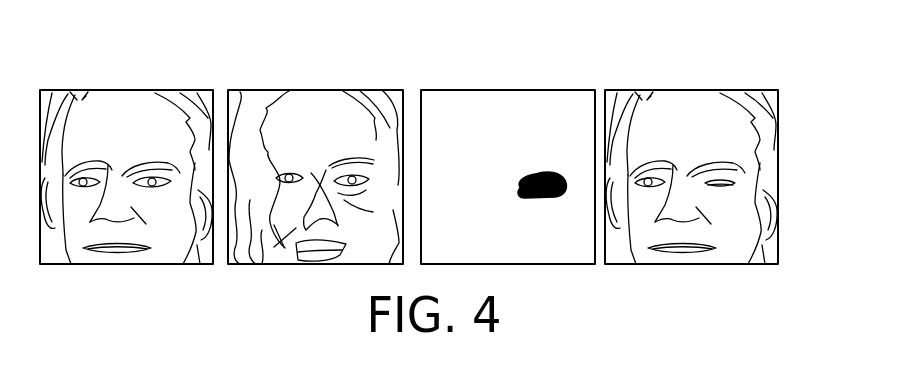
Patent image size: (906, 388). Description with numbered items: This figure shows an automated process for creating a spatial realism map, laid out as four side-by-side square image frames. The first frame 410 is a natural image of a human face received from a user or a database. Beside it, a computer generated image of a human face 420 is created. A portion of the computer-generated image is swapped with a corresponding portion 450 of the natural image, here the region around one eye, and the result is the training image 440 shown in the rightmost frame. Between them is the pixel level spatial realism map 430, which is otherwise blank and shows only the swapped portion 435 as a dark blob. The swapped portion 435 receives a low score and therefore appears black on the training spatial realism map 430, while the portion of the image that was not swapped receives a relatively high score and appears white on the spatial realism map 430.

The first face image 410 is at (123, 88).
The computer generated image of a human face 420 is at (310, 88).
The pixel level spatial realism map 430 is at (511, 88).
The swapped portion 435 is at (543, 168).
The training image 440 is at (688, 88).
The corresponding portion of the natural image 450 is at (720, 183).